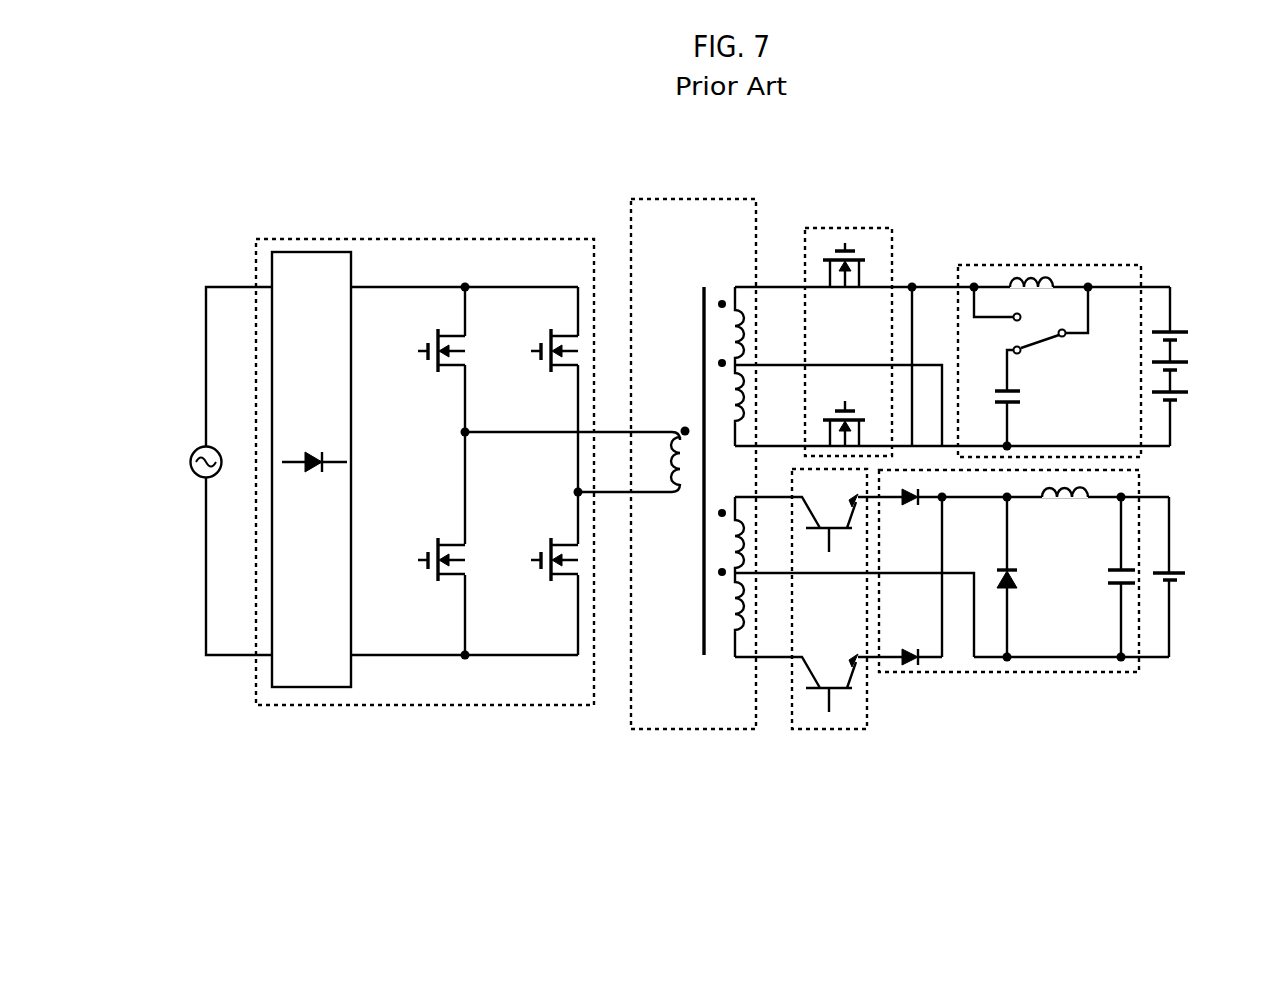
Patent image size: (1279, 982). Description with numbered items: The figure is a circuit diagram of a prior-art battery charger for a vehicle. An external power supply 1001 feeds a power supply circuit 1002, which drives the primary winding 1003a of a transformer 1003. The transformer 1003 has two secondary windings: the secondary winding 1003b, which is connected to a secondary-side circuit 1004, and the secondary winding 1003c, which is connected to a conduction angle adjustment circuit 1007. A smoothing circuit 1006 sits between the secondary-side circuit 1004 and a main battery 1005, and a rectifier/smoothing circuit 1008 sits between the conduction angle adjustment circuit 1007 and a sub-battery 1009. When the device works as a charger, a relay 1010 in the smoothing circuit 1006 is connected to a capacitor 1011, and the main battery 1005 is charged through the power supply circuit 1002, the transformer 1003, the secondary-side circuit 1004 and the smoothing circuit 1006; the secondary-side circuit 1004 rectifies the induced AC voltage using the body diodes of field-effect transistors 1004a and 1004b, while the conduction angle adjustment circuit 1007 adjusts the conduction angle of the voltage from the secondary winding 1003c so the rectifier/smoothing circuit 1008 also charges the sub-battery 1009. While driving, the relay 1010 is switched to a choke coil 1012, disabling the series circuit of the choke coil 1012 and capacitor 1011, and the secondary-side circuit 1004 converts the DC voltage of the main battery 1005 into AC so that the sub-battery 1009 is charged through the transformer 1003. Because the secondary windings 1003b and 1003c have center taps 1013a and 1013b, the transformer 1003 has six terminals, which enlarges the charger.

The external power supply 1001 is at (192, 453).
The power supply circuit 1002 is at (307, 239).
The transformer 1003 is at (610, 442).
The primary winding 1003a is at (673, 500).
The secondary winding 1003b is at (735, 287).
The secondary winding 1003c is at (742, 660).
The secondary-side circuit 1004 is at (952, 321).
The field-effect transistor 1004a is at (845, 293).
The field-effect transistor 1004b is at (839, 408).
The main battery 1005 is at (1187, 377).
The smoothing circuit 1006 is at (1049, 340).
The conduction angle adjustment circuit 1007 is at (842, 730).
The rectifier/smoothing circuit 1008 is at (1140, 673).
The sub-battery 1009 is at (1185, 580).
The relay 1010 is at (1062, 337).
The capacitor 1011 is at (1017, 403).
The choke coil 1012 is at (1040, 277).
The center tap 1013a is at (778, 363).
The center tap 1013b is at (775, 575).